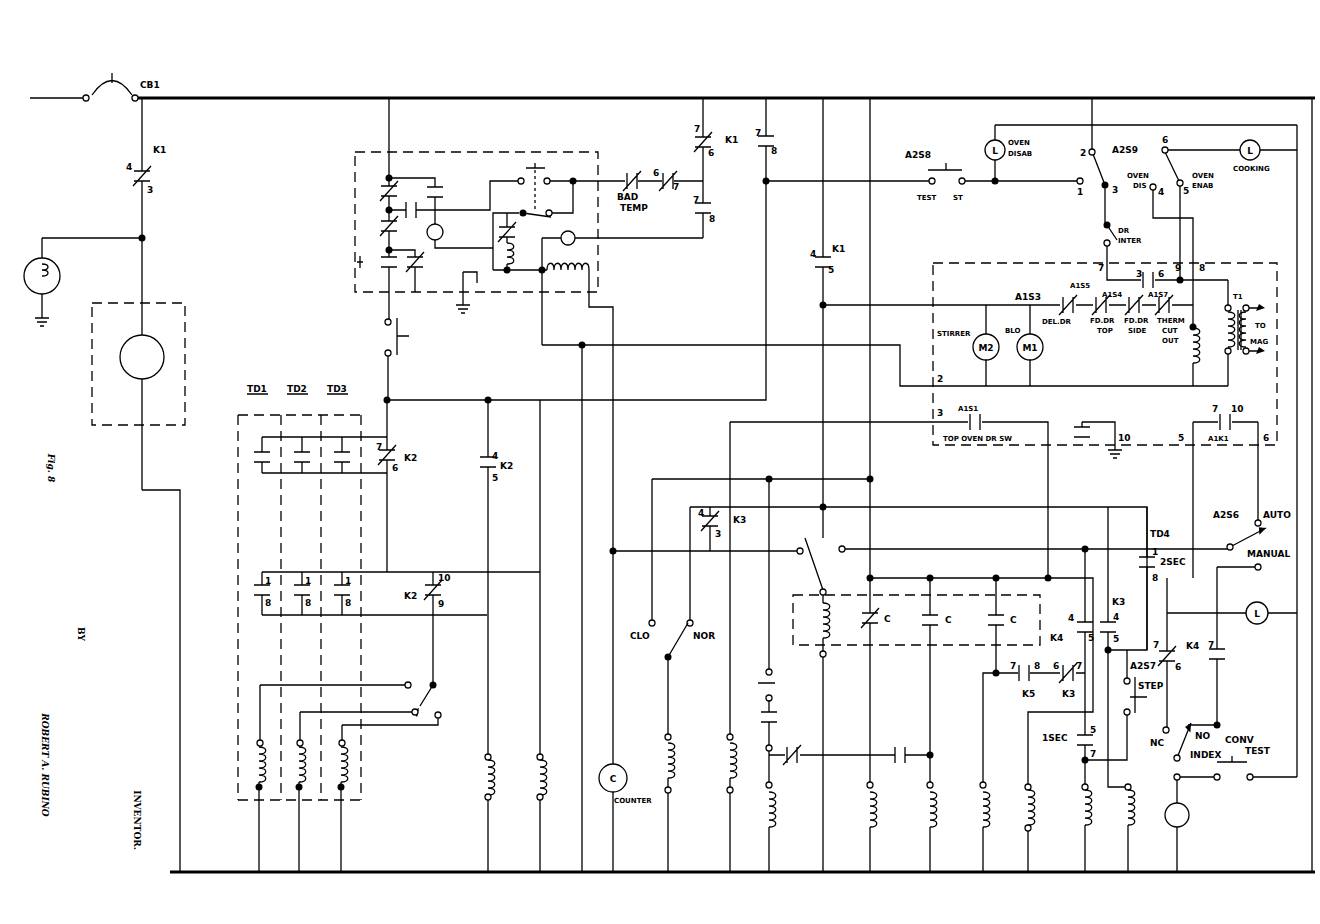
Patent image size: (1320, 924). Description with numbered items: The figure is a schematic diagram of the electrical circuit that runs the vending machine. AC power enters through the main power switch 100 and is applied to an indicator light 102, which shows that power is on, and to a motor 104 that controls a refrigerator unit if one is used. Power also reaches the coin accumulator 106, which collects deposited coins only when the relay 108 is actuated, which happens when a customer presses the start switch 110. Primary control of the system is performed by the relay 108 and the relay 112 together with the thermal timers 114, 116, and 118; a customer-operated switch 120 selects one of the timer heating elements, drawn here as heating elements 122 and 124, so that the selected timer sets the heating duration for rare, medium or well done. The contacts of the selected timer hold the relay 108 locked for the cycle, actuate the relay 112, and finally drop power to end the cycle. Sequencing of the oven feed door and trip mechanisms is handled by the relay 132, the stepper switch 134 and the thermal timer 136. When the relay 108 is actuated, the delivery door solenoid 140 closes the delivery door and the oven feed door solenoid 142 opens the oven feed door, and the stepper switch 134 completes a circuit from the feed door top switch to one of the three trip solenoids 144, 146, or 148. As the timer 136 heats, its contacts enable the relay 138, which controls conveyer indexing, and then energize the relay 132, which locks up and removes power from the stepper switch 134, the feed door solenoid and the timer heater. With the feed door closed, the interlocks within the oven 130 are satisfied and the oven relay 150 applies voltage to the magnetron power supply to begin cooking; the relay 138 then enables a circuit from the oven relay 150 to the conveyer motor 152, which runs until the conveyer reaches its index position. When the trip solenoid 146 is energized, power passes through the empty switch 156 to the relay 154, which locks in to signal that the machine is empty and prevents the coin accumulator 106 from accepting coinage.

The main power switch 100 is at (126, 76).
The indicator light 102 is at (34, 260).
The motor 104 is at (164, 356).
The coin accumulator 106 is at (355, 244).
The relay 108 is at (544, 755).
The start switch 110 is at (407, 357).
The relay 112 is at (487, 797).
The thermal timer 114 is at (256, 470).
The thermal timer 116 is at (300, 490).
The thermal timer 118 is at (342, 476).
The switch 120 is at (426, 690).
The timer TD1 coil 122 is at (256, 768).
The heating element 124 is at (298, 770).
The oven 130 is at (932, 282).
The relay 132 is at (1130, 818).
The stepper switch 134 is at (818, 618).
The thermal timer 136 is at (1031, 791).
The relay 138 is at (1083, 816).
The delivery door solenoid 140 is at (665, 752).
The oven feed door solenoid 142 is at (726, 752).
The trip solenoid 144 is at (868, 805).
The trip solenoid 146 is at (928, 808).
The trip solenoid 148 is at (982, 803).
The oven relay 150 is at (1190, 361).
The conveyer motor 152 is at (1192, 815).
The relay 154 is at (772, 818).
The empty switch 156 is at (905, 742).